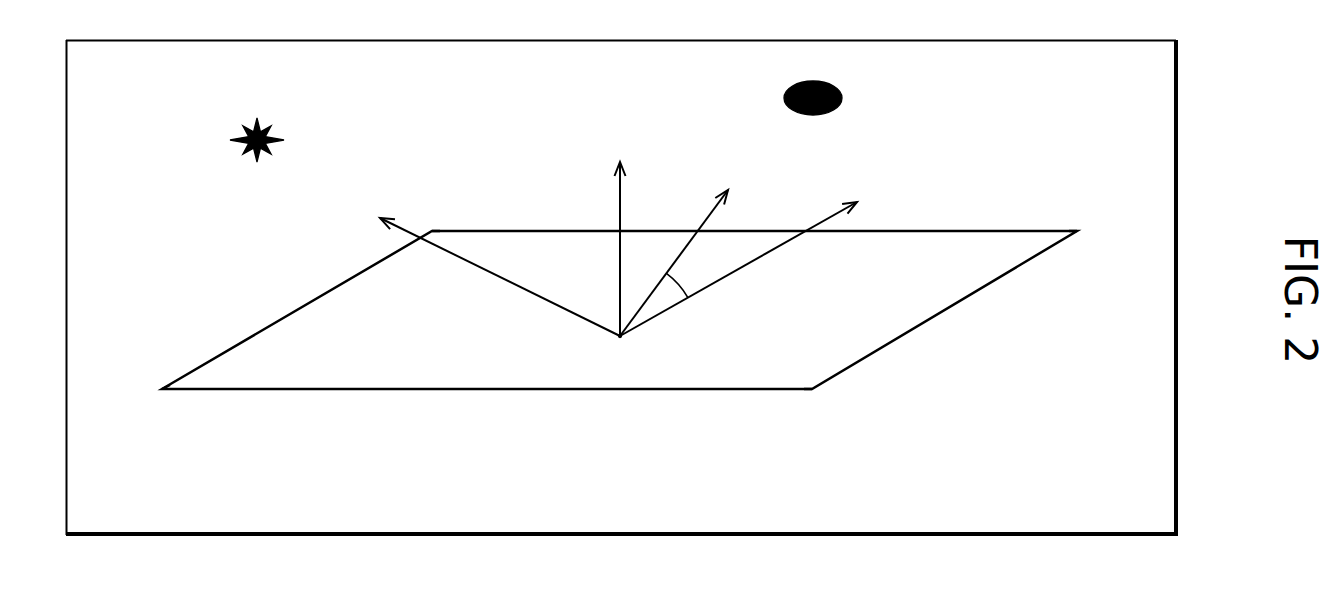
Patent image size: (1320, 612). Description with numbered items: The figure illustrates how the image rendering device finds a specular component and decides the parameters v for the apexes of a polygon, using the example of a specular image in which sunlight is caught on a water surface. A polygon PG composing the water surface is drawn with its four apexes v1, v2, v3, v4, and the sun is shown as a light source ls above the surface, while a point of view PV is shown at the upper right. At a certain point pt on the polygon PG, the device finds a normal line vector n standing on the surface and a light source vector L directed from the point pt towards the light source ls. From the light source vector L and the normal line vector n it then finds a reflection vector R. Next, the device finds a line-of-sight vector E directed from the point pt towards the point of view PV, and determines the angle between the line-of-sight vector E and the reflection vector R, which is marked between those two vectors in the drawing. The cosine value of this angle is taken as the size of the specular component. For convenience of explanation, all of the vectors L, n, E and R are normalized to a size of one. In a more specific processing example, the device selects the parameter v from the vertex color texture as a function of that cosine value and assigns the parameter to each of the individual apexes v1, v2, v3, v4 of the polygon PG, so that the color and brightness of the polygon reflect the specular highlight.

The polygon PG is at (870, 327).
The apex of the polygon v1 is at (144, 398).
The apex of the polygon v2 is at (432, 213).
The apex of the polygon v3 is at (820, 409).
The apex of the polygon v4 is at (1094, 238).
The point on the polygon pt is at (620, 337).
The normal line vector n is at (620, 234).
The line-of-sight vector E is at (683, 248).
The reflection vector R is at (749, 256).
The light source vector L is at (487, 267).
The light source ls is at (283, 144).
The point of view PV is at (842, 90).